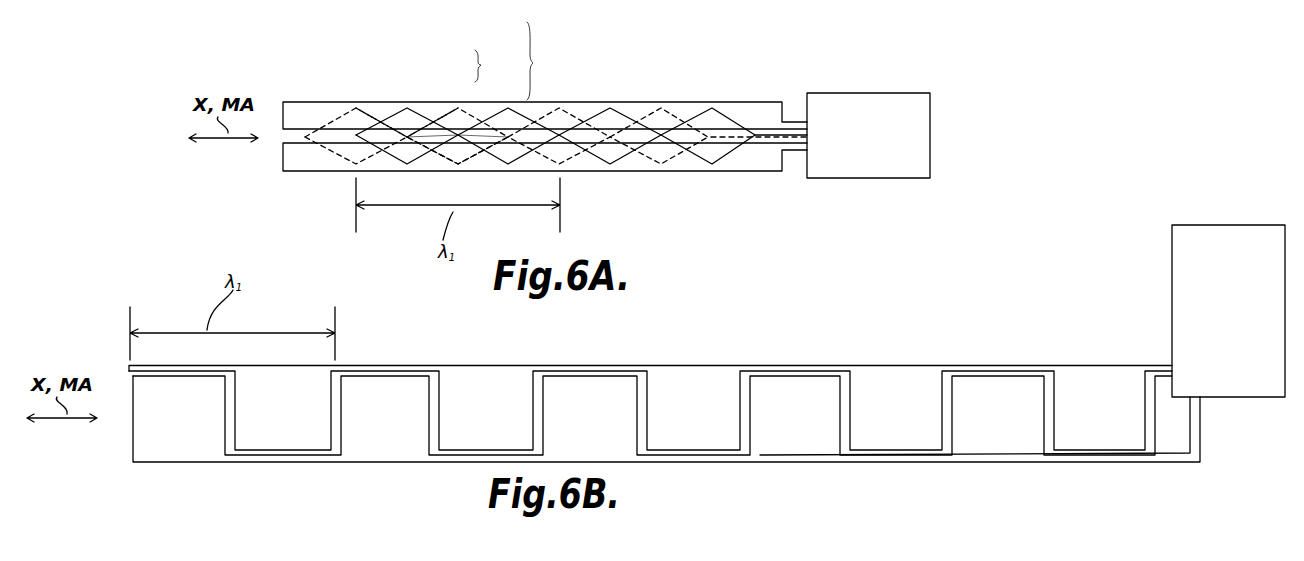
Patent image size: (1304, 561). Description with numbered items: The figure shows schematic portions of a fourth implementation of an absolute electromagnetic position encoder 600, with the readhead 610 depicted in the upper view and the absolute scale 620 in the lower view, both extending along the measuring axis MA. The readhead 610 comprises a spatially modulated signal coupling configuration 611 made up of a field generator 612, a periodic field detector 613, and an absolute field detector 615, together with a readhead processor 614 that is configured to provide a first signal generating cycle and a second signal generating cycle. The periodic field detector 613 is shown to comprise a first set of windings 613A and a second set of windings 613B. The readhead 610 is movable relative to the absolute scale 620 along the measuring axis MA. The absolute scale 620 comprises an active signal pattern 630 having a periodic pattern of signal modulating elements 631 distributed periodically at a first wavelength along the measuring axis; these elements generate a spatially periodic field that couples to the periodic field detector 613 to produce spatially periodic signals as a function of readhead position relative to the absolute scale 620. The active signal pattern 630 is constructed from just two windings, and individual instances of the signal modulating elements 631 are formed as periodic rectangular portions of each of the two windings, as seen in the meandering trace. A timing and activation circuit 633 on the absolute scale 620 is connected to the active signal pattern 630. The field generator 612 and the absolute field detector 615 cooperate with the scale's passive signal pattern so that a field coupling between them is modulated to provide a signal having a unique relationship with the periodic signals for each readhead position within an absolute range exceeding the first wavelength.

In FIG. 6A, the absolute electromagnetic position encoder 600 is at (996, 52).
In FIG. 6B, the absolute electromagnetic position encoder 600 is at (1024, 328).
In FIG. 6A, the readhead 610 is at (957, 92).
In FIG. 6A, the spatially modulated signal coupling configuration 611 is at (549, 61).
In FIG. 6A, the field generator 612 is at (397, 113).
In FIG. 6A, the periodic field detector 613 is at (556, 107).
In FIG. 6A, the first set of windings 613A is at (406, 110).
In FIG. 6A, the second set of windings 613B is at (437, 124).
In FIG. 6A, the readhead processor 614 is at (845, 178).
In FIG. 6A, the absolute field detector 615 is at (428, 140).
In FIG. 6B, the absolute scale 620 is at (1217, 438).
In FIG. 6B, the active signal pattern 630 is at (833, 360).
In FIG. 6B, the signal modulating elements 631 is at (650, 346).
In FIG. 6B, the timing and activation circuit 633 is at (1208, 397).